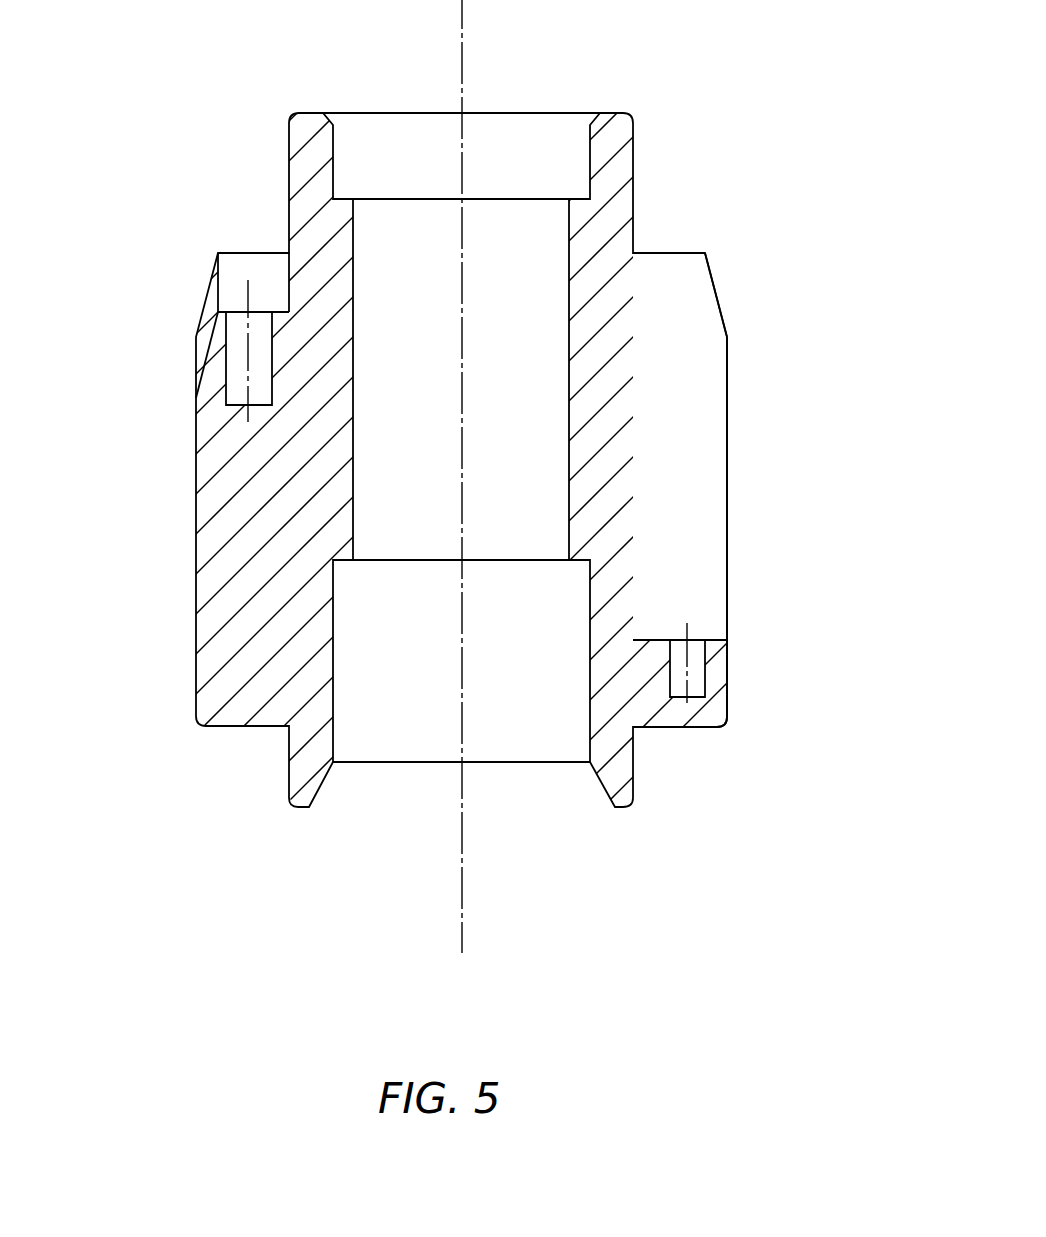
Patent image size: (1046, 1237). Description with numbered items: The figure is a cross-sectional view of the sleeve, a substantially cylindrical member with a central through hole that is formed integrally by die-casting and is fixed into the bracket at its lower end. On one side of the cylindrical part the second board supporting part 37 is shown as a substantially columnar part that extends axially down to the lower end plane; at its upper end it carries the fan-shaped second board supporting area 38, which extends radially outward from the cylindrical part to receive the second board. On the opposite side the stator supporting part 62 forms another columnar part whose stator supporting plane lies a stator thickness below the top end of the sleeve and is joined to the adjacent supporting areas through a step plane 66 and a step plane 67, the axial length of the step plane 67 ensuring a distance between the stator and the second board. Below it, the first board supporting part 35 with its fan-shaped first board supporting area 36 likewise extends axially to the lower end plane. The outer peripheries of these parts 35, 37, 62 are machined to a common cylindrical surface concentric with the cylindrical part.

The first board supporting part 35 is at (653, 692).
The first board supporting area 36 is at (650, 633).
The second board supporting part 37 is at (237, 537).
The second board supporting area 38 is at (222, 307).
The stator supporting part 62 is at (727, 470).
The step plane 66 is at (650, 418).
The step plane 67 is at (263, 262).